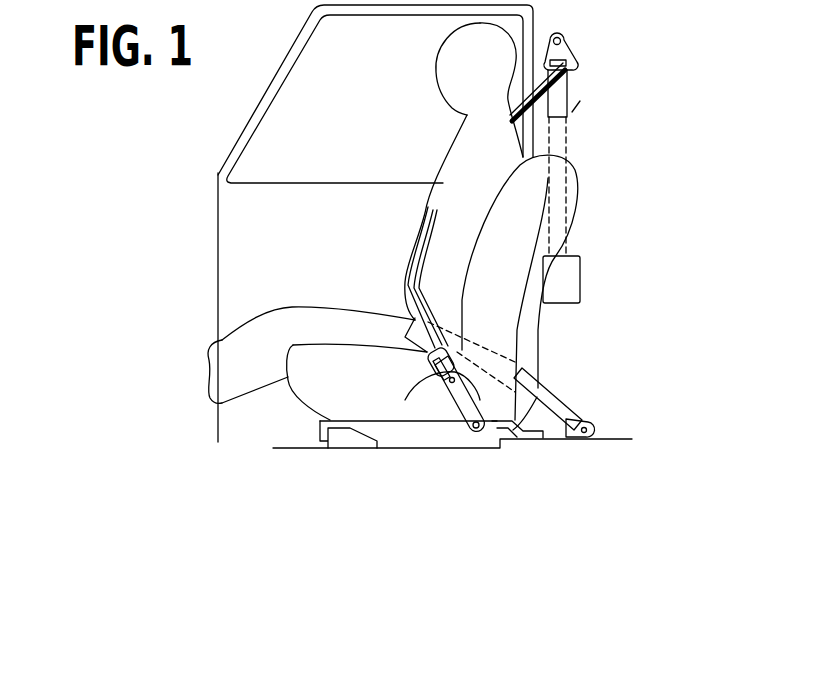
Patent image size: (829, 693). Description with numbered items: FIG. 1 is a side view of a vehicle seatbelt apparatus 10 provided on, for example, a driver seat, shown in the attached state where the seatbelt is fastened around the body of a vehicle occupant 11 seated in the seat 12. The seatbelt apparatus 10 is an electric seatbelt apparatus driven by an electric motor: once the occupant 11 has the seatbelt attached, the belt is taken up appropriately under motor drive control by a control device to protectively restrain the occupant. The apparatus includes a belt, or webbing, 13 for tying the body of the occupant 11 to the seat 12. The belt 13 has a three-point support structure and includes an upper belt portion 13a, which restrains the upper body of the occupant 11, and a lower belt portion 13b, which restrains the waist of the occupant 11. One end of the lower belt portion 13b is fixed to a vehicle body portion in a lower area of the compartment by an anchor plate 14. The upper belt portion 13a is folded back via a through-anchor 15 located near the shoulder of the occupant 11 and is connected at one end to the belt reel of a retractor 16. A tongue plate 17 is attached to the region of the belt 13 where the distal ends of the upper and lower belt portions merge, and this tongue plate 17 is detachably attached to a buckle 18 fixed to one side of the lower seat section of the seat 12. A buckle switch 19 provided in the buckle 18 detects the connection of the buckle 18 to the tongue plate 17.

The vehicle seatbelt apparatus 10 is at (596, 272).
The vehicle occupant 11 is at (463, 173).
The seat 12 is at (507, 312).
The belt (webbing) 13 is at (410, 282).
The upper belt portion 13a is at (557, 100).
The lower belt portion 13b is at (542, 397).
The anchor plate 14 is at (590, 423).
The through-anchor 15 is at (575, 52).
The retractor 16 is at (570, 272).
The tongue plate 17 is at (427, 380).
The buckle 18 is at (473, 385).
The buckle switch 19 is at (445, 380).